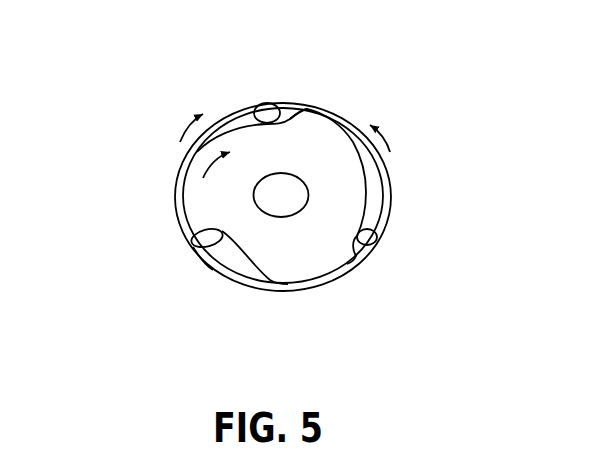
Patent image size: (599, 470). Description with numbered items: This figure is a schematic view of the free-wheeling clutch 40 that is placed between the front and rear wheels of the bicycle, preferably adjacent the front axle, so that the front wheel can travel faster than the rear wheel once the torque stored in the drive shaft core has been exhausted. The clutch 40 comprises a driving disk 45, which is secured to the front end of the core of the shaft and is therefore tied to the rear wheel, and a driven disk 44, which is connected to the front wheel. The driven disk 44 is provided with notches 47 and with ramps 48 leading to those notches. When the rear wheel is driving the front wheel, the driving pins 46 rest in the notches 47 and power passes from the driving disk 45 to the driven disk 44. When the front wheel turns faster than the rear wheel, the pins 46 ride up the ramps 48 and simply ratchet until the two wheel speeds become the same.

The free-wheeling clutch 40 is at (123, 284).
The driven disk 44 is at (292, 249).
The driving disk 45 is at (244, 287).
The driving pins 46 is at (268, 108).
The notches 47 is at (307, 108).
The ramps 48 is at (190, 151).